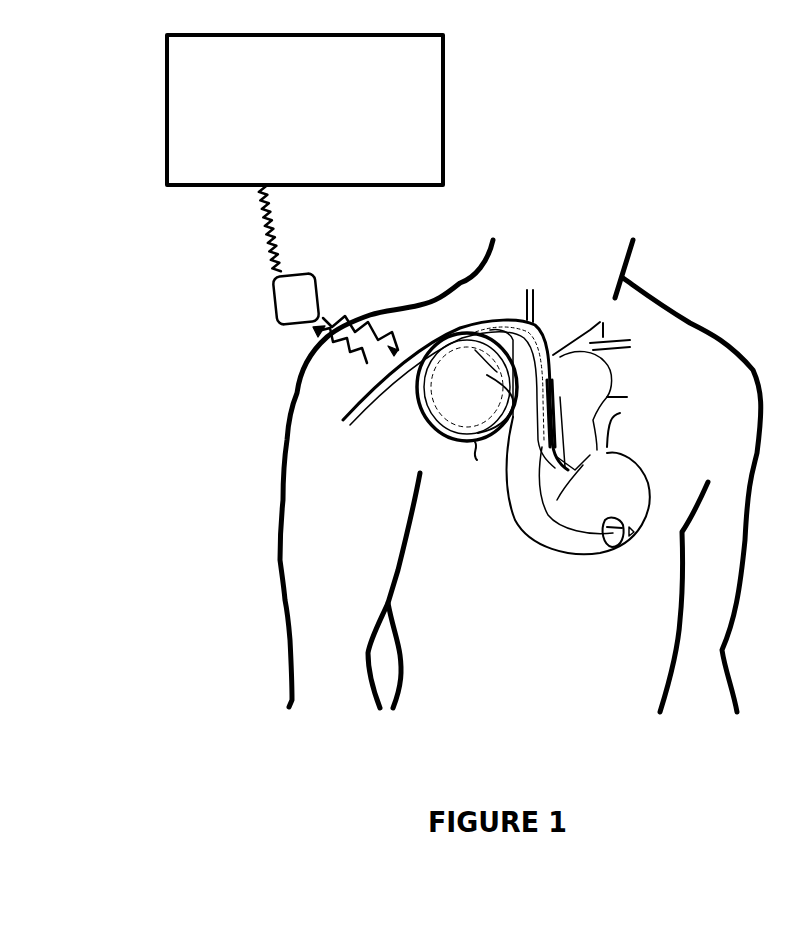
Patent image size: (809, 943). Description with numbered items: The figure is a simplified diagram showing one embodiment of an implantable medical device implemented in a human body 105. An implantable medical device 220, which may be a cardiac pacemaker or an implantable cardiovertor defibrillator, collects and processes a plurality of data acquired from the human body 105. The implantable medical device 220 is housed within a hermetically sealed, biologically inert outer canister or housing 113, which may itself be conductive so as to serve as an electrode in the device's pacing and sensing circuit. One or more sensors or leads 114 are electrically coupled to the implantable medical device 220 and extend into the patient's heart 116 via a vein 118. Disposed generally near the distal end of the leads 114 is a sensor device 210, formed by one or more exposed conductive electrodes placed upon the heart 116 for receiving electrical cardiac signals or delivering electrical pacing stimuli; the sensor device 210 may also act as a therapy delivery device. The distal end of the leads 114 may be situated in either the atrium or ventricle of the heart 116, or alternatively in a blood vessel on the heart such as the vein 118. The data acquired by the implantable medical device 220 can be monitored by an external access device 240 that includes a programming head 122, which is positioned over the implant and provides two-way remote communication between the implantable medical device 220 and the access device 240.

The human body 105 is at (733, 337).
The access device 240 is at (203, 185).
The programming head 122 is at (305, 285).
The vein 118 is at (428, 345).
The housing 113 is at (427, 417).
The implantable medical device 220 is at (468, 398).
The leads 114 is at (476, 463).
The heart 116 is at (603, 553).
The sensor device 210 is at (640, 508).